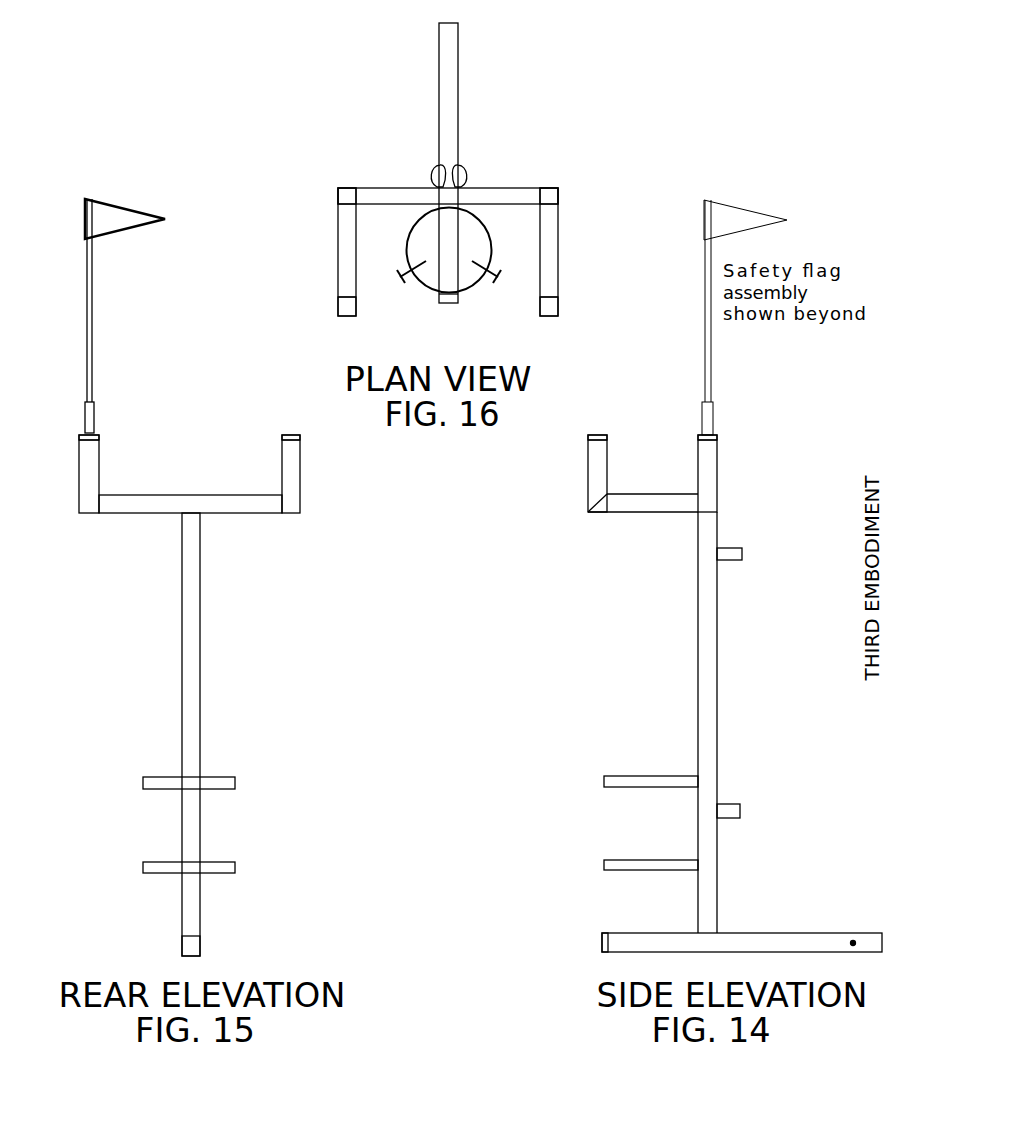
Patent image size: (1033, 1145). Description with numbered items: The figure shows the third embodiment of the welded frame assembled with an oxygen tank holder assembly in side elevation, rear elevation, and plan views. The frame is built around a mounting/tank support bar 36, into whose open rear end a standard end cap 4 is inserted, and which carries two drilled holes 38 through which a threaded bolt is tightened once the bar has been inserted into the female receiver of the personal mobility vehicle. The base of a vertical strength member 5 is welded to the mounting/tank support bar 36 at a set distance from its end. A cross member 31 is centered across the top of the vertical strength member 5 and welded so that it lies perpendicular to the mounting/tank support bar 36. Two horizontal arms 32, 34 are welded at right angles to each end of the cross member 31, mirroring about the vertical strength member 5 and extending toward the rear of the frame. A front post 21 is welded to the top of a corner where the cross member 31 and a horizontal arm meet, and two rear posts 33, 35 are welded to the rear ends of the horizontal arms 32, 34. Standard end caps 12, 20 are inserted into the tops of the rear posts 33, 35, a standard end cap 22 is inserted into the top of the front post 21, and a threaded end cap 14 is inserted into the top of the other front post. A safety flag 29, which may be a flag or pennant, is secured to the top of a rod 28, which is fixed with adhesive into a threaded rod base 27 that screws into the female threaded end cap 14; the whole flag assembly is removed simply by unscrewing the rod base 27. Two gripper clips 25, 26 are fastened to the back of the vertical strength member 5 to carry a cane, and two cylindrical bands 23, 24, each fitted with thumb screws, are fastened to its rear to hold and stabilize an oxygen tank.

In FIG. 15, the end cap 4 is at (228, 936).
In FIG. 14, the end cap 4 is at (577, 943).
In FIG. 15, the vertical strength member 5 is at (217, 734).
In FIG. 14, the vertical strength member 5 is at (734, 722).
In FIG. 16, the end cap 12 is at (315, 325).
In FIG. 15, the end cap 12 is at (123, 410).
In FIG. 16, the threaded end cap 14 is at (315, 172).
In FIG. 16, the end cap 20 is at (589, 320).
In FIG. 15, the end cap 20 is at (264, 418).
In FIG. 14, the end cap 20 is at (580, 420).
In FIG. 14, the front post 21 is at (740, 473).
In FIG. 16, the end cap 22 is at (585, 182).
In FIG. 14, the end cap 22 is at (734, 420).
In FIG. 16, the cylindrical band 23 is at (442, 272).
In FIG. 15, the cylindrical band 23 is at (216, 760).
In FIG. 14, the cylindrical band 23 is at (628, 758).
In FIG. 15, the cylindrical band 24 is at (214, 849).
In FIG. 14, the cylindrical band 24 is at (625, 849).
In FIG. 16, the gripper clip 25 is at (421, 161).
In FIG. 14, the gripper clip 25 is at (760, 537).
In FIG. 14, the gripper clip 26 is at (758, 793).
In FIG. 15, the threaded rod base 27 is at (61, 408).
In FIG. 15, the rod 28 is at (60, 300).
In FIG. 15, the safety flag 29 is at (138, 235).
In FIG. 16, the cross member 31 is at (448, 168).
In FIG. 15, the cross member 31 is at (200, 526).
In FIG. 16, the horizontal arm 32 is at (584, 252).
In FIG. 14, the horizontal arm 32 is at (643, 529).
In FIG. 15, the rear post 33 is at (259, 472).
In FIG. 14, the rear post 33 is at (568, 473).
In FIG. 16, the horizontal arm 34 is at (317, 252).
In FIG. 15, the rear post 35 is at (123, 471).
In FIG. 16, the mounting/tank support bar 36 is at (480, 163).
In FIG. 14, the mounting/tank support bar 36 is at (742, 916).
In FIG. 14, the drilled holes 38 is at (832, 922).